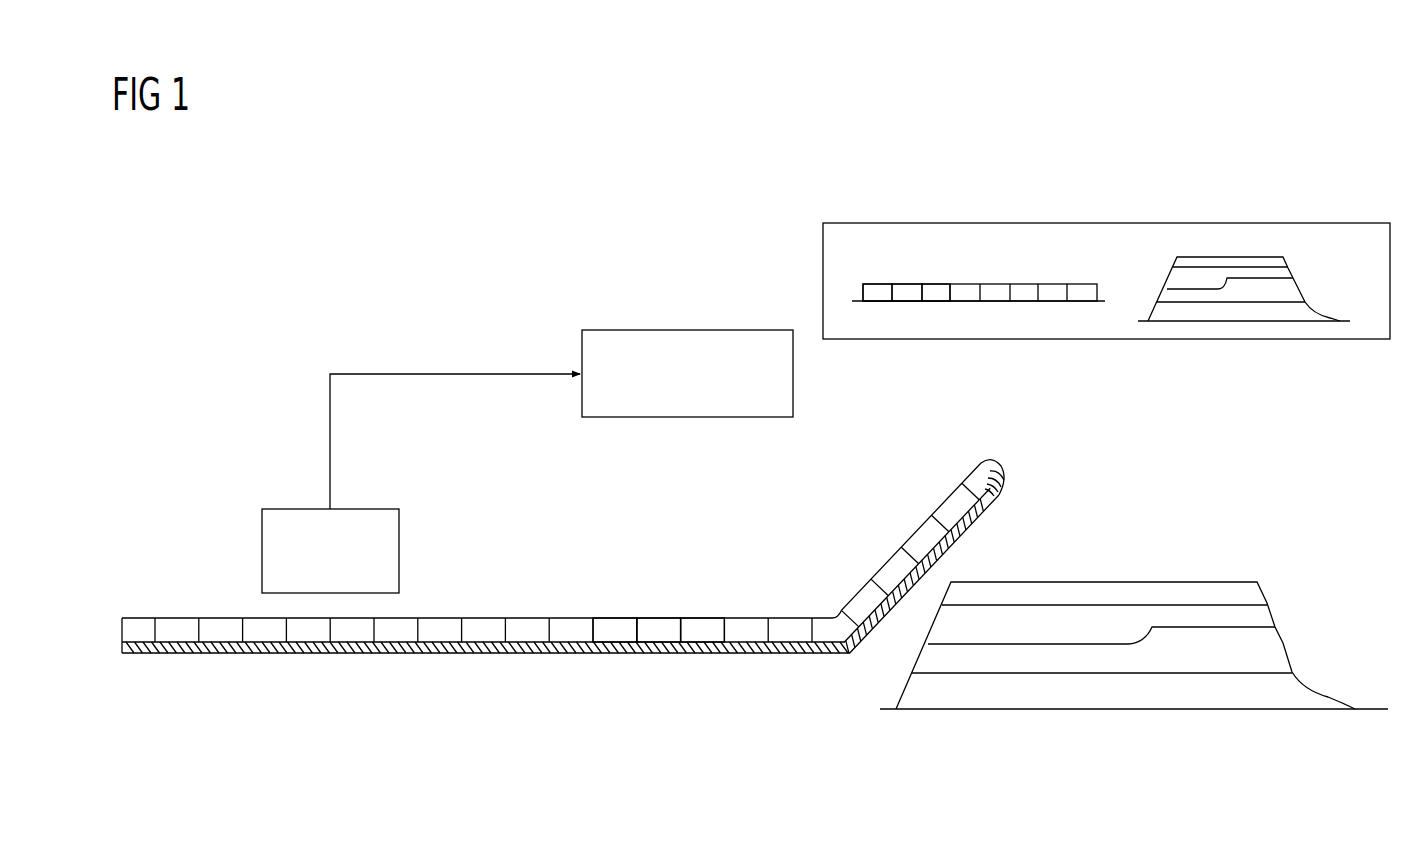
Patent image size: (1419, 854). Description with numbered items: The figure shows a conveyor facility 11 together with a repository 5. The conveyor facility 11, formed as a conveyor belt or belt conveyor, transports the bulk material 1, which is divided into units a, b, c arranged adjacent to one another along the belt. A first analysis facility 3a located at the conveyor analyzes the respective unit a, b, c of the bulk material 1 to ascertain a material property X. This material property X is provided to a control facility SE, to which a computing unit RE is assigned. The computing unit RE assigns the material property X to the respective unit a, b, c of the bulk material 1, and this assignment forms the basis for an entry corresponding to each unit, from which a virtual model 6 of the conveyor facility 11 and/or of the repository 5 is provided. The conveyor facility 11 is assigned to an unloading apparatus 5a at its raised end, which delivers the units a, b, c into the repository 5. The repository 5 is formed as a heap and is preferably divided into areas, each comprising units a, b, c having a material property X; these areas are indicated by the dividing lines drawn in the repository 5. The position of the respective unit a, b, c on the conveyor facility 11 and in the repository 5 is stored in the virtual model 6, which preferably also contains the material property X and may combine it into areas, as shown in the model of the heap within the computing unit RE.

The bulk material 1 is at (563, 479).
The conveyor facility 11 is at (513, 654).
The unit of bulk material a is at (615, 630).
The unit of bulk material b is at (658, 630).
The unit of bulk material c is at (704, 630).
The first analysis facility 3a is at (297, 509).
The control facility SE is at (692, 330).
The material property X is at (1317, 653).
The unloading apparatus 5a is at (971, 450).
The repository 5 is at (1197, 530).
The computing unit RE is at (1000, 223).
The virtual model 6 is at (1246, 244).